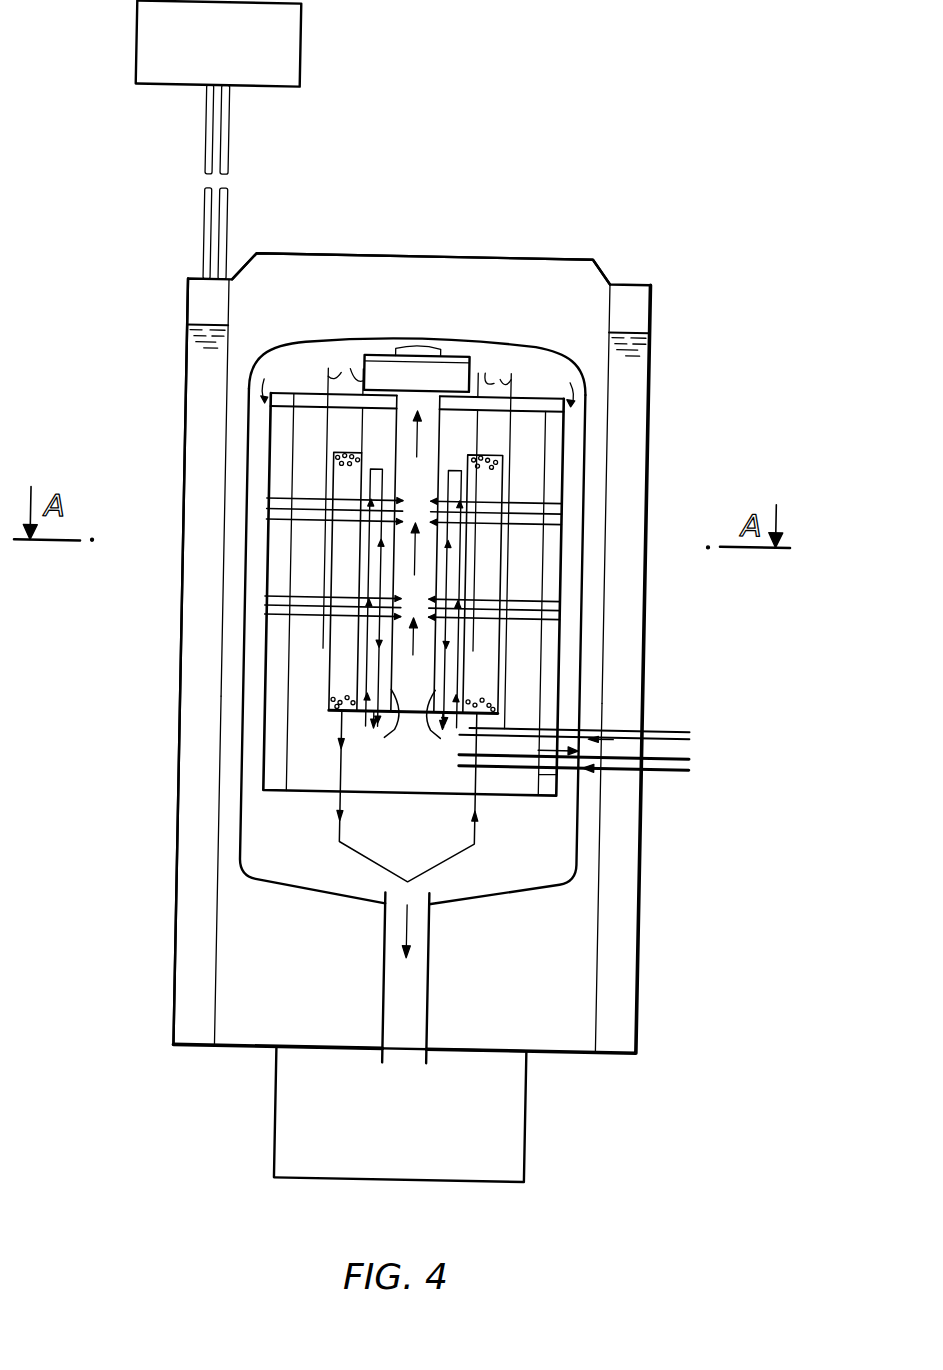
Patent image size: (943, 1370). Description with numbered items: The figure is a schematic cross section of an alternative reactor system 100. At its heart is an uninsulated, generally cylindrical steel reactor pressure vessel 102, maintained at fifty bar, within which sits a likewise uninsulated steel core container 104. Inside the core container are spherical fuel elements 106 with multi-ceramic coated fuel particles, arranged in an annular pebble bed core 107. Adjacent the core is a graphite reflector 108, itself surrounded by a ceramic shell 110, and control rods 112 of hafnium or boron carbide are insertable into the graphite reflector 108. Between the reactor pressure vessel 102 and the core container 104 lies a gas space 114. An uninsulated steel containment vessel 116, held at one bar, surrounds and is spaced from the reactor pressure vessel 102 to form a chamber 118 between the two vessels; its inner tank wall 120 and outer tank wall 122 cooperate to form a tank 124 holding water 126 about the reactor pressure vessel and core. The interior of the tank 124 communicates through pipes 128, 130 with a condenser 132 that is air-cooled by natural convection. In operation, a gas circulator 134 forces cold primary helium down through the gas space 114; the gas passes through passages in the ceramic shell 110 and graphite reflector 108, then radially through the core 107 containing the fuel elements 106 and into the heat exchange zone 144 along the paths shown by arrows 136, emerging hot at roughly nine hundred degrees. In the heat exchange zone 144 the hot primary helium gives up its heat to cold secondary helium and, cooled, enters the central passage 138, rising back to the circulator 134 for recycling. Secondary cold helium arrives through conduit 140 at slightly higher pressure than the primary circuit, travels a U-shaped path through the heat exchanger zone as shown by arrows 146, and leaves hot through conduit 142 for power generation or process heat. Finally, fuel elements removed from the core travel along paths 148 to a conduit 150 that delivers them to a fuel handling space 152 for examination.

The reactor system 100 is at (116, 450).
The reactor pressure vessel 102 is at (246, 463).
The core container 104 is at (267, 653).
The spherical fuel elements 106 is at (347, 468).
The pebble bed core 107 is at (415, 532).
The graphite reflector 108 is at (303, 529).
The ceramic shell 110 is at (280, 745).
The control rods 112 is at (418, 371).
The gas space 114 is at (248, 418).
The containment vessel 116 is at (447, 252).
The chamber 118 is at (226, 850).
The inner tank wall 120 is at (224, 524).
The outer tank wall 122 is at (189, 337).
The tank 124 is at (180, 375).
The water 126 is at (194, 694).
The pipe 128 is at (194, 250).
The pipe 130 is at (222, 217).
The condenser 132 is at (281, 40).
The gas circulator 134 is at (447, 352).
The arrows 136 is at (260, 494).
The passage 138 is at (416, 443).
The conduit 140 is at (691, 722).
The conduit 142 is at (692, 734).
The heat exchange zone 144 is at (413, 588).
The arrows 146 is at (401, 729).
The paths 148 is at (342, 809).
The conduit 150 is at (433, 985).
The fuel handling space 152 is at (527, 1106).